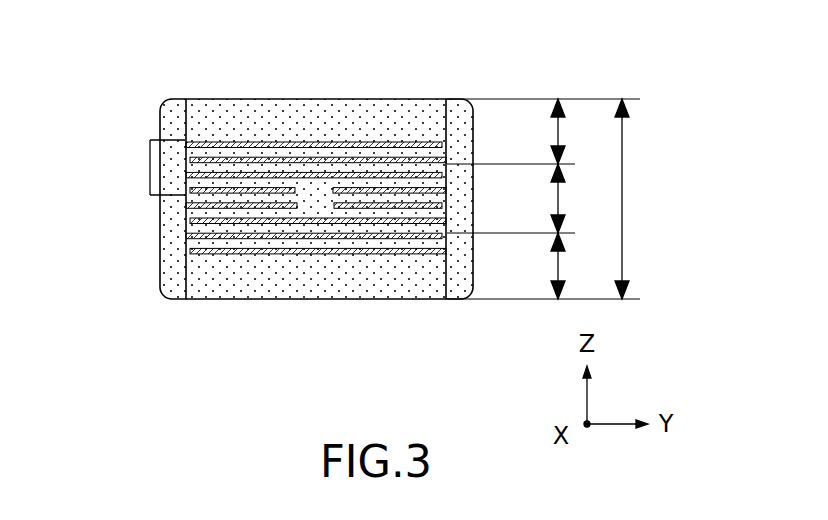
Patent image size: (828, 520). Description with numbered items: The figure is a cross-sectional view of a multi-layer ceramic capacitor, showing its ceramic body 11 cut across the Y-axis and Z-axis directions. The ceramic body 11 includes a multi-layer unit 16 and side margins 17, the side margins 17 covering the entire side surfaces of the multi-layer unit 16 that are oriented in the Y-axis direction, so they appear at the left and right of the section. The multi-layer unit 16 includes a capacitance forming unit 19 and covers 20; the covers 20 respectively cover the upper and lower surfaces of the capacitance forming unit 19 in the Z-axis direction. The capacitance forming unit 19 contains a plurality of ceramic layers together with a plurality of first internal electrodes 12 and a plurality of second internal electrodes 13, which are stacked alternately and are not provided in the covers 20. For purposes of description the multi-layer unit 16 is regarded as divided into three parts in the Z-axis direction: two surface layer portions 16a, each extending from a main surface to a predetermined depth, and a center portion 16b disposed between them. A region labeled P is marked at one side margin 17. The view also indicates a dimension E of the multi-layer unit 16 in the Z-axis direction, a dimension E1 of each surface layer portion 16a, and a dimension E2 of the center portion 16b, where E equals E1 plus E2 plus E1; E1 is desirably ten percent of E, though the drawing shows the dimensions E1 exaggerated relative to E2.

The ceramic body 11 is at (312, 210).
The first internal electrodes 12 is at (244, 233).
The second internal electrodes 13 is at (345, 253).
The multi-layer unit 16 is at (363, 154).
The surface layer portions 16a is at (363, 199).
The center portion 16b is at (363, 144).
The side margins 17 is at (183, 99).
The capacitance forming unit 19 is at (331, 210).
The covers 20 is at (328, 135).
The region P is at (150, 171).
The dimension E is at (633, 199).
The dimension E1 is at (573, 199).
The dimension E2 is at (573, 198).